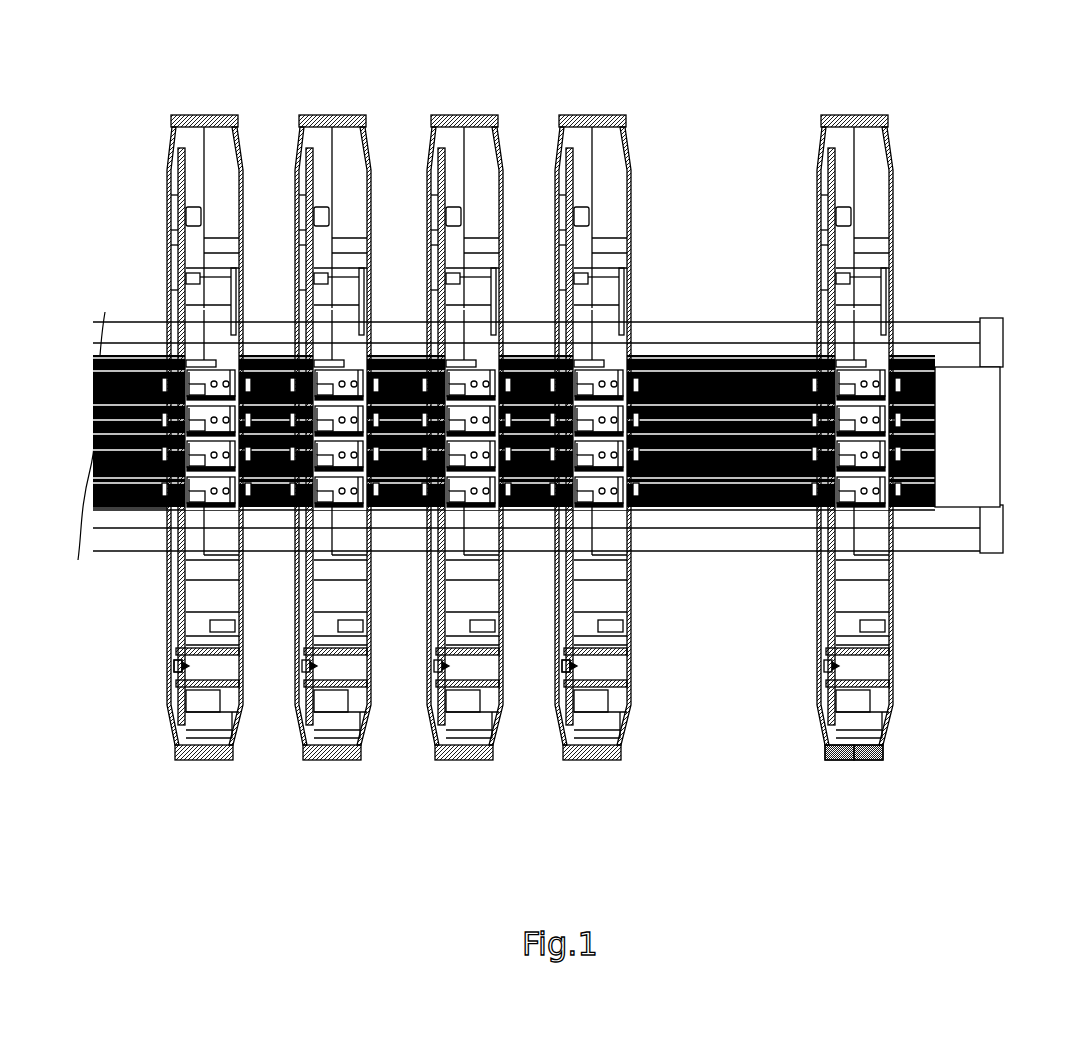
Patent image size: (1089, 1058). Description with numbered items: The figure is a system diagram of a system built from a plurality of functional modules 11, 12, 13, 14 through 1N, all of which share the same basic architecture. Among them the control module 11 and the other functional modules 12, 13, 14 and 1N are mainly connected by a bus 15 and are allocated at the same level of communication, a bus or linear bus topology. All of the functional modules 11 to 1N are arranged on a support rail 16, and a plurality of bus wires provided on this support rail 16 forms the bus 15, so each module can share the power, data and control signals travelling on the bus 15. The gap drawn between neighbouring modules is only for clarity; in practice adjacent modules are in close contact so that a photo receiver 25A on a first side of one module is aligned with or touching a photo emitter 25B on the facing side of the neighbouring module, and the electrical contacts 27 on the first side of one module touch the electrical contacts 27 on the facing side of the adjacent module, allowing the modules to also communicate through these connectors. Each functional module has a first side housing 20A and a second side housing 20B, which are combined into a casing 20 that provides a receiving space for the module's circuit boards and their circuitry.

The control module 11 is at (198, 110).
The functional module 12 is at (326, 110).
The functional module 13 is at (458, 110).
The functional module 14 is at (586, 110).
The functional module 1N is at (841, 110).
The bus 15 is at (1008, 372).
The support rail 16 is at (937, 336).
The electrical contacts 27 is at (138, 510).
The photo receiver 25A is at (172, 666).
The photo emitter 25B is at (580, 666).
The first side housing 20A is at (835, 762).
The second side housing 20B is at (870, 762).
The casing 20 is at (908, 824).